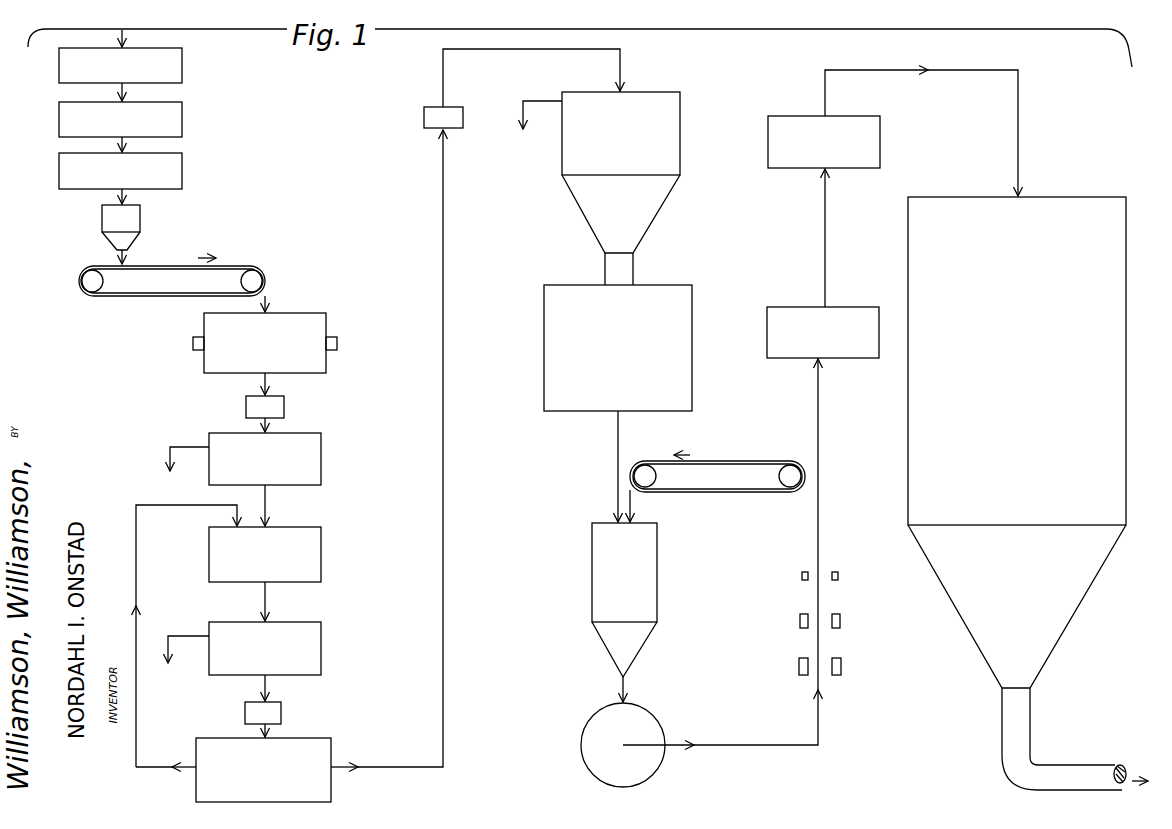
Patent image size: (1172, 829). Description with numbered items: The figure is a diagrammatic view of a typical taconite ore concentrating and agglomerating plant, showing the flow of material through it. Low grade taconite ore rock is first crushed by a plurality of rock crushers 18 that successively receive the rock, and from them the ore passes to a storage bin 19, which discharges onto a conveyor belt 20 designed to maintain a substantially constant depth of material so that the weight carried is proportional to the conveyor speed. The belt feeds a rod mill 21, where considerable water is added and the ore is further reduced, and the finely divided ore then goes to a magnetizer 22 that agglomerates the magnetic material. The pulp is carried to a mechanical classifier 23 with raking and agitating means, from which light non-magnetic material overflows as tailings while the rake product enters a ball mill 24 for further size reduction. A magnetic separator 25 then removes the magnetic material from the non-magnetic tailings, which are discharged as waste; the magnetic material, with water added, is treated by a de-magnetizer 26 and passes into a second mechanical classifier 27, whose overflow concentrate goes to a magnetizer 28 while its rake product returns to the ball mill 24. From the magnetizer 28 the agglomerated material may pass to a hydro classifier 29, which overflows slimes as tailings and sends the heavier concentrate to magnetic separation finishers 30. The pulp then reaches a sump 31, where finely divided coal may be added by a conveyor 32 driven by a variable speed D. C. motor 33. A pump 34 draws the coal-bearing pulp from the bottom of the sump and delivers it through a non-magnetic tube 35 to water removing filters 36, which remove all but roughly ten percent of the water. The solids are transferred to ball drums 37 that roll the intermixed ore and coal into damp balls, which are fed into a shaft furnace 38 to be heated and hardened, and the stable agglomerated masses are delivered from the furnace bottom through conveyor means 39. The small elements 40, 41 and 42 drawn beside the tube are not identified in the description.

The rock crushers 18 is at (182, 70).
The storage bin 19 is at (140, 228).
The conveyor belt 20 is at (240, 266).
The rod mill 21 is at (326, 330).
The magnetizer 22 is at (284, 407).
The mechanical classifier 23 is at (321, 452).
The ball mill 24 is at (321, 546).
The magnetic separator 25 is at (321, 637).
The de-magnetizer 26 is at (281, 711).
The second mechanical classifier 27 is at (331, 752).
The magnetizer 28 is at (455, 107).
The hydro classifier 29 is at (680, 129).
The magnetic separation finishers 30 is at (692, 320).
The sump 31 is at (652, 583).
The conveyor 32 is at (752, 462).
The variable speed D. C. motor 33 is at (791, 482).
The pump 34 is at (648, 718).
The non-magnetic tube 35 is at (818, 717).
The water removing filters 36 is at (852, 307).
The ball drums 37 is at (857, 116).
The shaft furnace 38 is at (1120, 262).
The conveyor means 39 is at (1022, 737).
The burner 40 is at (841, 660).
The burner 41 is at (840, 616).
The burner 42 is at (838, 573).